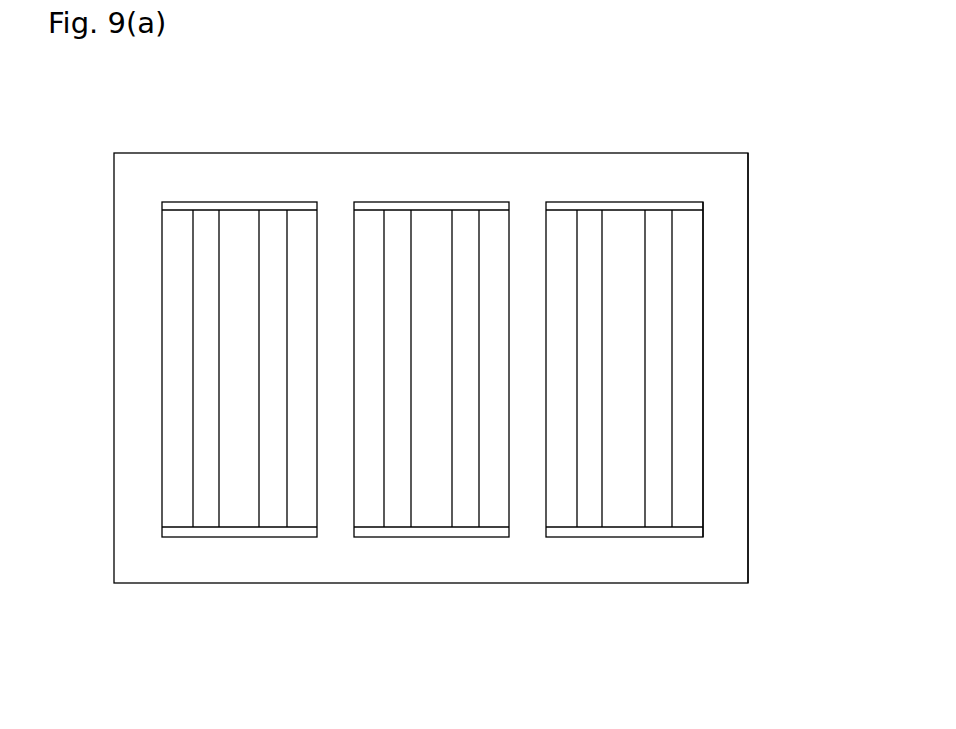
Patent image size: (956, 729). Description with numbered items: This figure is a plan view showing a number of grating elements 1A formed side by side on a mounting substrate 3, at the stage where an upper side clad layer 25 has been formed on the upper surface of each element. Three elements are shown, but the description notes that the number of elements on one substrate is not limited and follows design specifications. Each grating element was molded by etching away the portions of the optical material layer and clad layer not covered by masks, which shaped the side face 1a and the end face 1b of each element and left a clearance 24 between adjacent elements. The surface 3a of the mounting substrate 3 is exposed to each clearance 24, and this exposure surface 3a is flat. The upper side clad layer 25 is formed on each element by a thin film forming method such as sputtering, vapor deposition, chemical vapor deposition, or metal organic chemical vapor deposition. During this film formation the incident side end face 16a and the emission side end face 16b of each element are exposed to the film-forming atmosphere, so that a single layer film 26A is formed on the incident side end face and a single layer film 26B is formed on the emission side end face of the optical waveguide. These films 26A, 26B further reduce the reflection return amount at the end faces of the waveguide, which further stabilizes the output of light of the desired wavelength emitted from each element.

The mounting substrate 3 is at (730, 382).
The surface of the mounting substrate 3a is at (730, 289).
The solar cell 1A is at (298, 188).
The side face 1a is at (703, 240).
The end face 1b is at (592, 210).
The clearance 24 is at (335, 228).
The upper side clad layer 25 is at (240, 228).
The single layer film 26A is at (204, 202).
The single layer film 26B is at (235, 537).
The incident side end face 16a is at (418, 210).
The emission side end face 16b is at (429, 537).